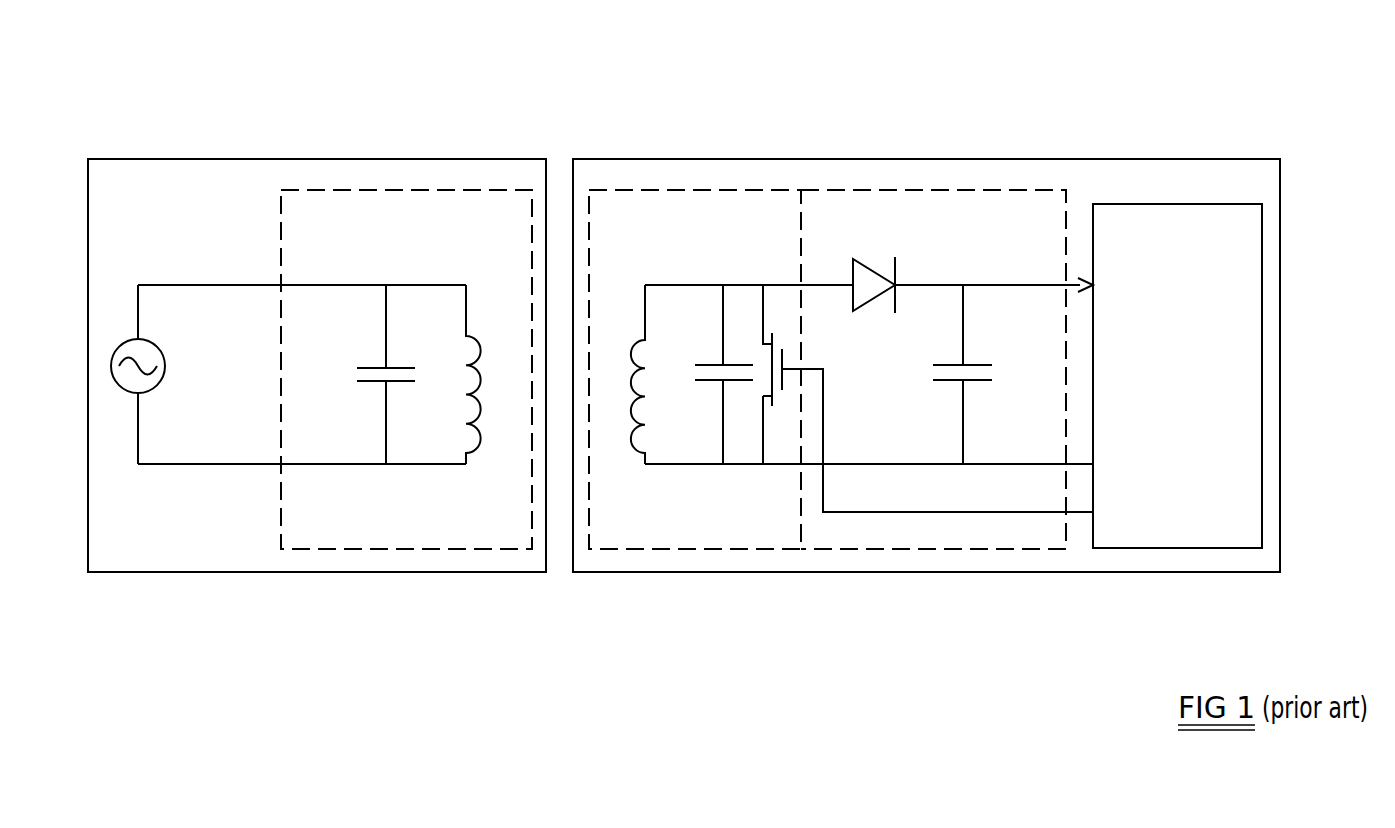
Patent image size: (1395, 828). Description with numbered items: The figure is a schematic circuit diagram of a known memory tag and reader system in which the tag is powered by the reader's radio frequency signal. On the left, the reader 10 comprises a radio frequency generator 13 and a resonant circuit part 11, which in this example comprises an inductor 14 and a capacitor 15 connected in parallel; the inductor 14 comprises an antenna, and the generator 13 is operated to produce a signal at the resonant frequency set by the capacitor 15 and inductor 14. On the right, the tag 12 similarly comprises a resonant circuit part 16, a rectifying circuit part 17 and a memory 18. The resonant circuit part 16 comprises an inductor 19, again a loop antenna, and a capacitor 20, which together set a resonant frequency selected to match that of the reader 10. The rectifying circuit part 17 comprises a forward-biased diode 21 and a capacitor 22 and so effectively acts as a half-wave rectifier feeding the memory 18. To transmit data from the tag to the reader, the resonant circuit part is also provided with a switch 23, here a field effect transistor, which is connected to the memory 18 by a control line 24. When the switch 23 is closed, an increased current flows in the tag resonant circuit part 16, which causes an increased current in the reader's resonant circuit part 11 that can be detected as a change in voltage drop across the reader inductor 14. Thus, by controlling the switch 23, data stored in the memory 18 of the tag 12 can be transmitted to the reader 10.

The reader 10 is at (424, 156).
The resonant circuit part 11 is at (478, 190).
The tag 12 is at (1154, 141).
The radio frequency generator 13 is at (132, 395).
The inductor 14 is at (481, 408).
The capacitor 15 is at (400, 383).
The resonant circuit part 16 is at (760, 550).
The rectifying circuit part 17 is at (1007, 549).
The memory 18 is at (1252, 305).
The inductor 19 is at (630, 352).
The capacitor 20 is at (709, 363).
The forward-biased diode 21 is at (863, 265).
The capacitor 22 is at (968, 357).
The switch 23 is at (781, 380).
The control line 24 is at (920, 512).